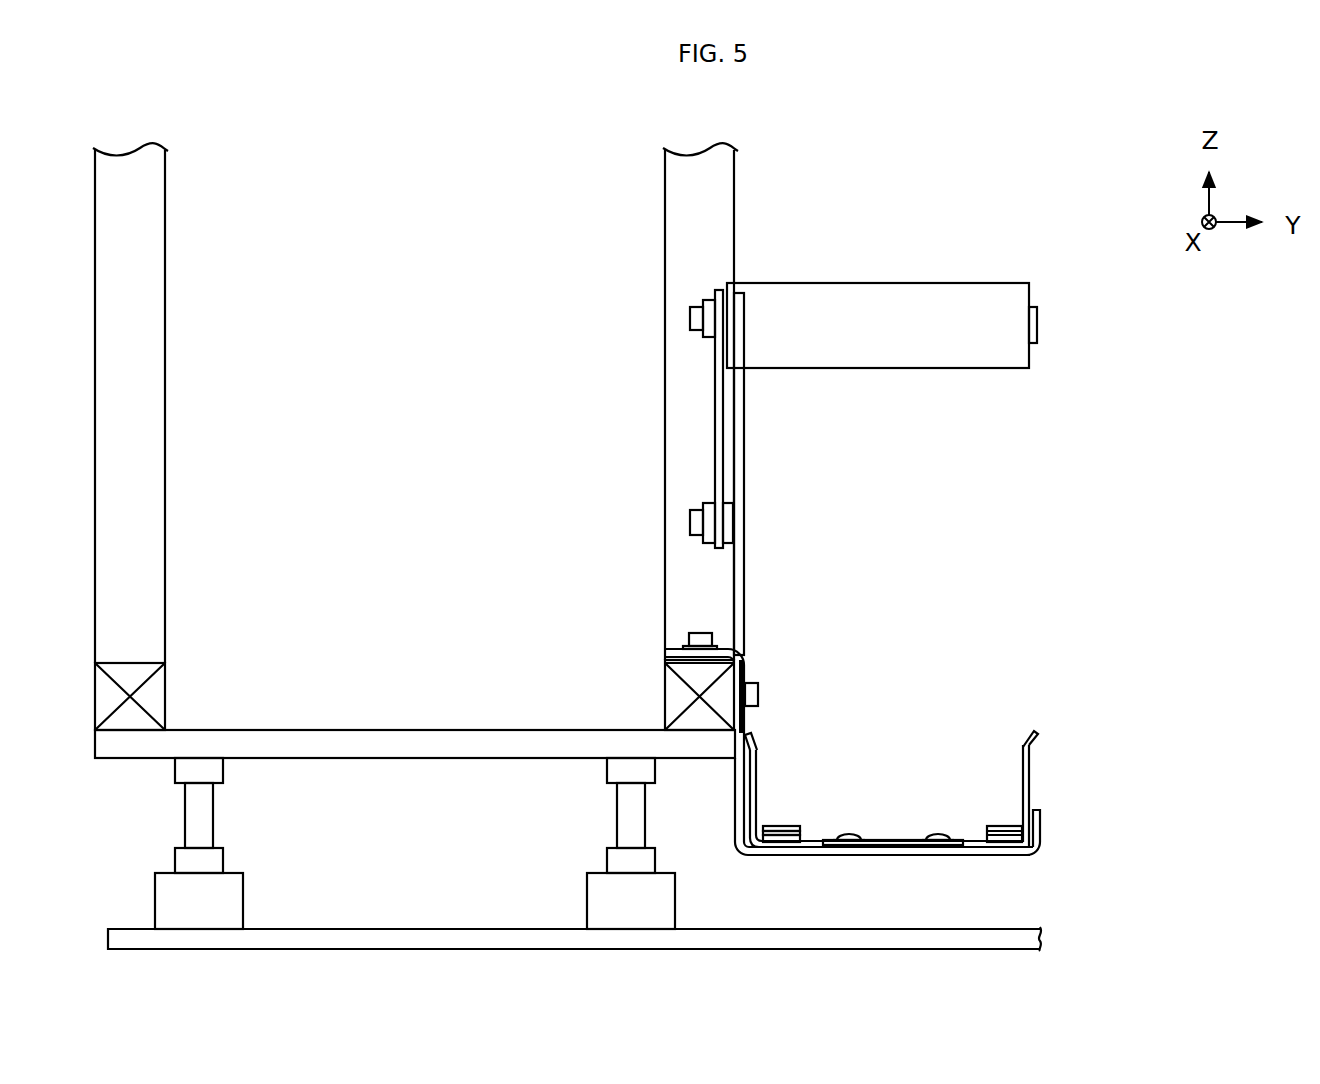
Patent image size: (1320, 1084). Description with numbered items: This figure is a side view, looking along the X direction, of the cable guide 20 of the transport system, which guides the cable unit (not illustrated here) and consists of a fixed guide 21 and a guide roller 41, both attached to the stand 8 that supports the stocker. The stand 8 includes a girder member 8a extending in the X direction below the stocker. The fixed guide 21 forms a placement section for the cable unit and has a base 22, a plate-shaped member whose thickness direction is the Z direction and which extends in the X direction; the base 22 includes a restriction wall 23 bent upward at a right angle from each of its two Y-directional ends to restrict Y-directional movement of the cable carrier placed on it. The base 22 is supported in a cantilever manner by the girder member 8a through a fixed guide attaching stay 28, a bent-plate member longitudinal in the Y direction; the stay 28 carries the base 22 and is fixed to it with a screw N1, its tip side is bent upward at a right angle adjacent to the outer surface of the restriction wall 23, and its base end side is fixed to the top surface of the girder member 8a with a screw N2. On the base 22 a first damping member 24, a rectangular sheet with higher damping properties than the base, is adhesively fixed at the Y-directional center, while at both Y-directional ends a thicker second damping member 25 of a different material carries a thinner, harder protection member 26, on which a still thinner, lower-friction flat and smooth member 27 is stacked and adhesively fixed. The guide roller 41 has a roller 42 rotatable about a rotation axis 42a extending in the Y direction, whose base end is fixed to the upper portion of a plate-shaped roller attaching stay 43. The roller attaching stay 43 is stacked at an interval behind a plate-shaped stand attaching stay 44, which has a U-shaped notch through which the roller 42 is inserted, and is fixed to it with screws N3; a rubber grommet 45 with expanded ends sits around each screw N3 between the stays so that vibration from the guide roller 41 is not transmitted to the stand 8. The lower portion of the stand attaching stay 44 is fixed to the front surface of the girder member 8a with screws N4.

The stand 8 is at (98, 780).
The girder member 8a is at (676, 690).
The cable guide 20 is at (1165, 375).
The fixed guide 21 is at (1078, 725).
The base 22 is at (973, 850).
The restriction wall 23 is at (765, 758).
The first damping member 24 is at (893, 840).
The second damping member 25 is at (787, 842).
The protection member 26 is at (774, 835).
The flat and smooth member 27 is at (782, 826).
The fixed guide attaching stay 28 is at (1041, 830).
The guide roller 41 is at (1058, 382).
The roller 42 is at (950, 295).
The rotation axis 42a is at (1038, 322).
The roller attaching stay 43 is at (719, 423).
The stand attaching stay 44 is at (745, 435).
The grommet 45 is at (712, 300).
The screw N1 is at (849, 836).
The screw N2 is at (697, 635).
The screw N3 is at (690, 318).
The screw N4 is at (758, 693).